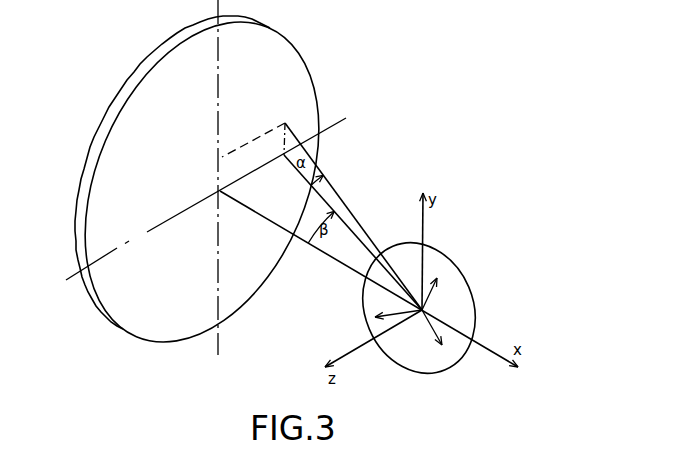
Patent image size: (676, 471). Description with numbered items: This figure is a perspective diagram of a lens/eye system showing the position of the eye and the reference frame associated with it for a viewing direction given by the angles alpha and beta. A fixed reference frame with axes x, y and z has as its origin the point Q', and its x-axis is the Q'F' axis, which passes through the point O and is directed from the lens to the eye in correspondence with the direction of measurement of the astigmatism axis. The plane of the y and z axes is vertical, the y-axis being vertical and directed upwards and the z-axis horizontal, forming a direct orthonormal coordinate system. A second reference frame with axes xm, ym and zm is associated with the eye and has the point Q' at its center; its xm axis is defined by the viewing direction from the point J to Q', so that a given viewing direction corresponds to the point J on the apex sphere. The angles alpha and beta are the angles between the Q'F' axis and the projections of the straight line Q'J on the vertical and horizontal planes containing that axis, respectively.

The point O is at (202, 189).
The point J is at (322, 210).
The point Q' is at (419, 308).